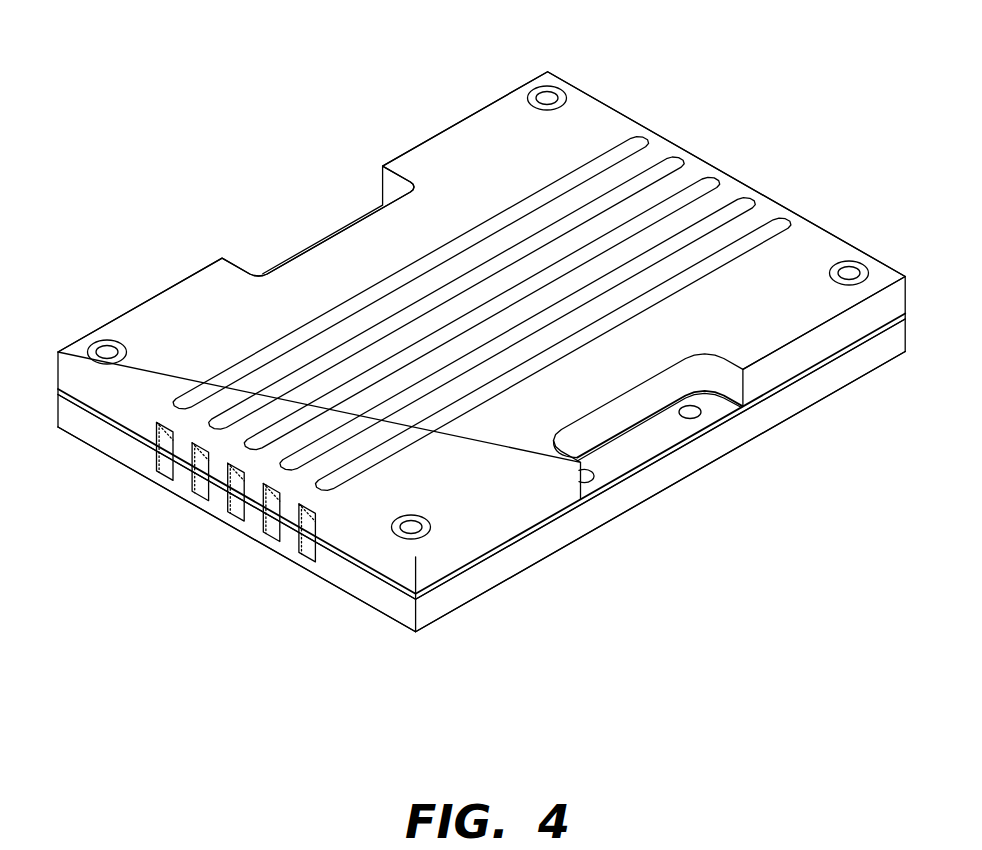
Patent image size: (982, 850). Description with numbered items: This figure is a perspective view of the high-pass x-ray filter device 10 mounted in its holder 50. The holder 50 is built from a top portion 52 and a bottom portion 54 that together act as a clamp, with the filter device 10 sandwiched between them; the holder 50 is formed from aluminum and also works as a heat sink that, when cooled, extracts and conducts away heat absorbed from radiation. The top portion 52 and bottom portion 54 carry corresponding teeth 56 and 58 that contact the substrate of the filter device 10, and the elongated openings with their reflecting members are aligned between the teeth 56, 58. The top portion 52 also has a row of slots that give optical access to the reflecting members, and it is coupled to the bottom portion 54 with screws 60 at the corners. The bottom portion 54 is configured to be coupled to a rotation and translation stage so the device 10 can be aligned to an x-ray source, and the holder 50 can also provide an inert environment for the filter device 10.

The high-pass x-ray filter device 10 is at (130, 432).
The holder 50 is at (427, 150).
The top portion 52 is at (482, 120).
The bottom portion 54 is at (665, 470).
The teeth 56 is at (218, 472).
The teeth 58 is at (480, 311).
The screws 60 is at (547, 96).